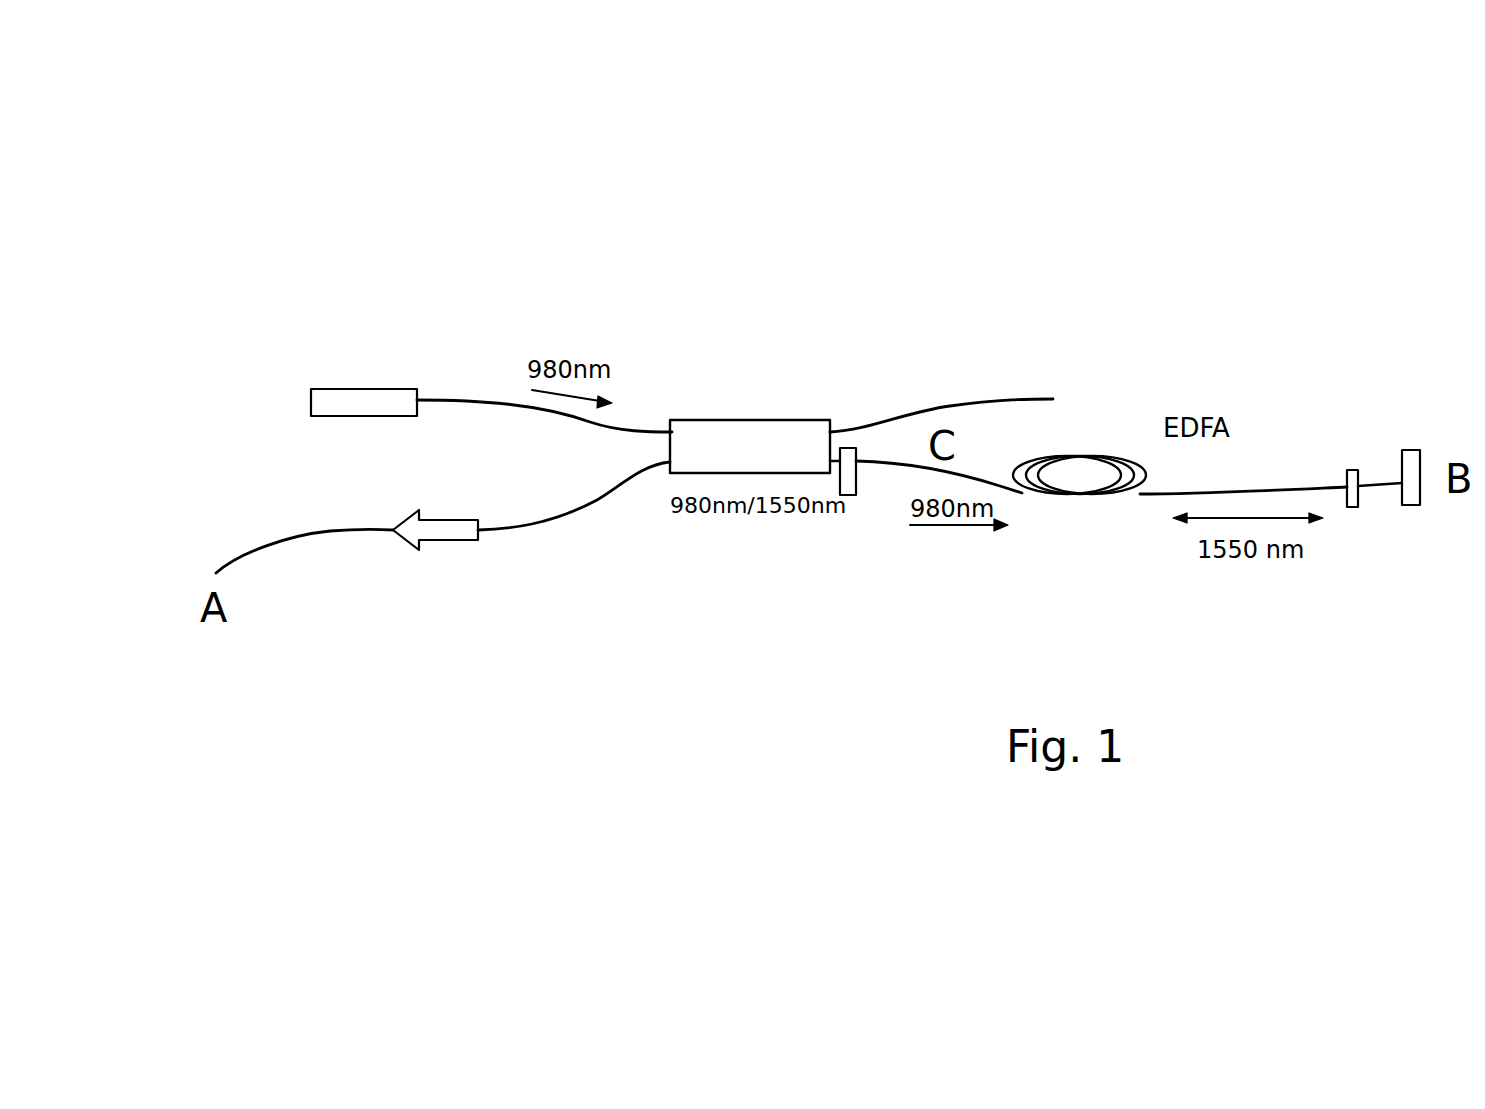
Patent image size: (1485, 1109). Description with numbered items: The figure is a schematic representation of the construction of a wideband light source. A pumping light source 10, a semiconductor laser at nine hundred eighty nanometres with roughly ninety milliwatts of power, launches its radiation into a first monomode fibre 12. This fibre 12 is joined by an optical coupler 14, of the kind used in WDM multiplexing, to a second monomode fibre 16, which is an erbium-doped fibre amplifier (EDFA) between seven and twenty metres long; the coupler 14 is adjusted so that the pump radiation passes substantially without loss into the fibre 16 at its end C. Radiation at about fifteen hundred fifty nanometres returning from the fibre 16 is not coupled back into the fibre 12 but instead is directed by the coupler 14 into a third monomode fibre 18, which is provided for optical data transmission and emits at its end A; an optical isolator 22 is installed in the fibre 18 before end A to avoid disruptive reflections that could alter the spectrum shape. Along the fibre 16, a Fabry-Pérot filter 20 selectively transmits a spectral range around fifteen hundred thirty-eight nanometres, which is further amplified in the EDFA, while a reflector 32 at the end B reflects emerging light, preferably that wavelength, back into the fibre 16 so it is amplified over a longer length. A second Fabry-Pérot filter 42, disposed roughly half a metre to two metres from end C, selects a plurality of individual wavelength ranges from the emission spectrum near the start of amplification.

The pumping light source 10 is at (353, 389).
The monomode fibre 12 is at (645, 425).
The optical coupler 14 is at (770, 420).
The second monomode fibre 16 is at (882, 465).
The third monomode fibre 18 is at (597, 500).
The Fabry-Pérot filter 20 is at (1352, 508).
The optical isolator 22 is at (450, 543).
The reflector 32 is at (1407, 450).
The second Fabry-Pérot filter 42 is at (855, 497).